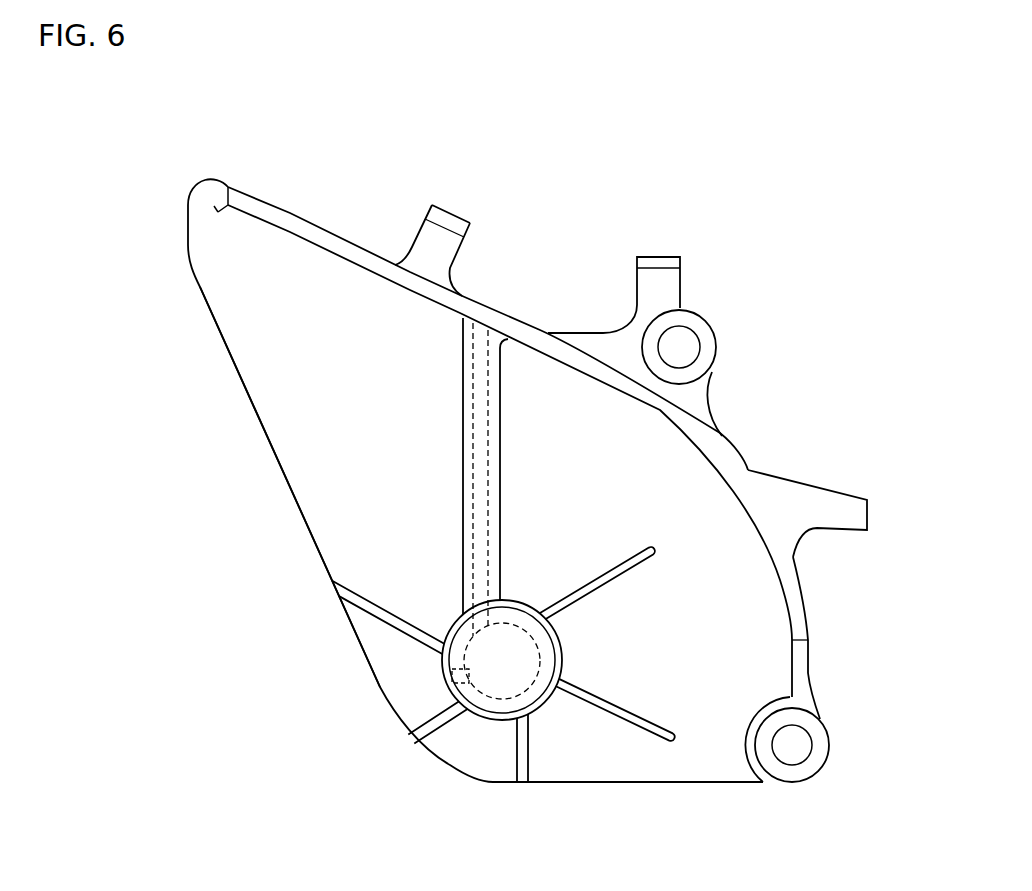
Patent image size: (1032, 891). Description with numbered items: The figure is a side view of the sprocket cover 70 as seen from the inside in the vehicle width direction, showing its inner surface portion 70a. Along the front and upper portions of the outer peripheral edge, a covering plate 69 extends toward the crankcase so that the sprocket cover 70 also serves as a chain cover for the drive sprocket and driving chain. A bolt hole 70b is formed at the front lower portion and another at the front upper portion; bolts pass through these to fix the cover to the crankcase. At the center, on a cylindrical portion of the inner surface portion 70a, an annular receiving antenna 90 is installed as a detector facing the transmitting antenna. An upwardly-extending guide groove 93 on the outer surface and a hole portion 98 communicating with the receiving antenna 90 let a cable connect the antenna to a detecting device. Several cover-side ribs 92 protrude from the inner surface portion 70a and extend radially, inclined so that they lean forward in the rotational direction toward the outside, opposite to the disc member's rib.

The covering plate 69 is at (363, 262).
The sprocket cover 70 is at (305, 258).
The inner surface portion 70a is at (338, 546).
The bolt hole 70b is at (688, 355).
The receiving antenna 90 is at (486, 716).
The cover-side rib 92 is at (612, 570).
The guide groove 93 is at (486, 501).
The hole portion 98 is at (462, 718).